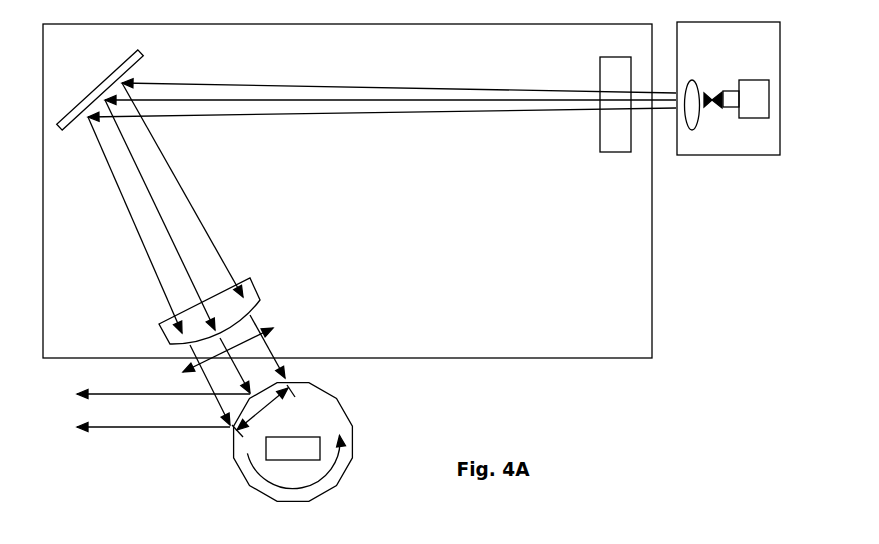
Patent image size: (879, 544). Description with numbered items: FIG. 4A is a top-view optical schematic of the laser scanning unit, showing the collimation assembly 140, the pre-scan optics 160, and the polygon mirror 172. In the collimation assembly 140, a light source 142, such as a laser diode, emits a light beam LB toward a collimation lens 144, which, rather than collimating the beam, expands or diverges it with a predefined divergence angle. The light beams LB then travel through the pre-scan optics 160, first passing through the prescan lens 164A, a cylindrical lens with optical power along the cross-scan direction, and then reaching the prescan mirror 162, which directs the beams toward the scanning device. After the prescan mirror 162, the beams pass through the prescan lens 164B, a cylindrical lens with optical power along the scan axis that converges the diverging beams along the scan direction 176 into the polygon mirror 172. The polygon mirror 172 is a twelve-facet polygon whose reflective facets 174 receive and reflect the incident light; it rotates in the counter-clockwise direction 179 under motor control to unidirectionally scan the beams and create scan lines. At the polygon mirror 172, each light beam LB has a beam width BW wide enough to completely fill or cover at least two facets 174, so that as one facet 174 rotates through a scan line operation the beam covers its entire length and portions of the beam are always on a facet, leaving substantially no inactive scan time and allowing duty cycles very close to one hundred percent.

The collimation assembly 140 is at (728, 88).
The light source 142 is at (753, 80).
The collimation lens 144 is at (692, 80).
The pre-scan optics 160 is at (347, 191).
The prescan mirror 162 is at (90, 93).
The prescan lens 164A is at (613, 152).
The prescan lens 164B is at (257, 294).
The polygon mirror 172 is at (293, 448).
The facets 174 is at (354, 441).
The scan direction 176 is at (262, 334).
The counter-clockwise direction 179 is at (320, 484).
The light beam LB is at (547, 90).
The beam width BW is at (278, 400).